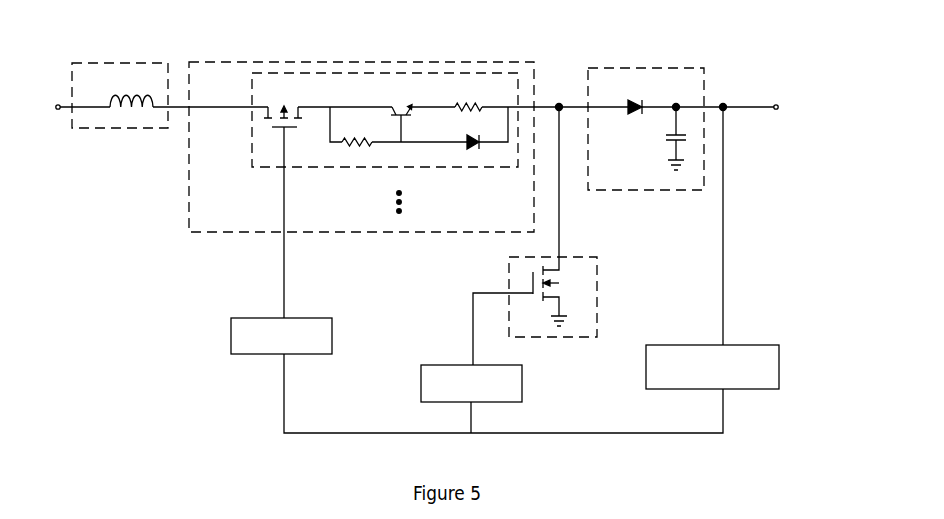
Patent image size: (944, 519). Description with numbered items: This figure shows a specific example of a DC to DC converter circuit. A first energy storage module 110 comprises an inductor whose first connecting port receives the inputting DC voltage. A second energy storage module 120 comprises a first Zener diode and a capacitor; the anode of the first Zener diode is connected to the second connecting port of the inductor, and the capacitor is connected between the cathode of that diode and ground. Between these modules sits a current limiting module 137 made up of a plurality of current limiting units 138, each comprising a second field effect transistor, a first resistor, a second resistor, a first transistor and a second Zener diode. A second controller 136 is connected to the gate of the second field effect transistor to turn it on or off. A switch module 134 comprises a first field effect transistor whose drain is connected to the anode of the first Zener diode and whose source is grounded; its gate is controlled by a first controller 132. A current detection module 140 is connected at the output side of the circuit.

The first energy storage module 110 is at (105, 62).
The second energy storage module 120 is at (657, 66).
The first controller 132 is at (523, 385).
The switch module 134 is at (597, 293).
The second controller 136 is at (333, 338).
The current limiting module 137 is at (341, 62).
The current limiting unit 138 is at (252, 90).
The current detection module 140 is at (780, 365).